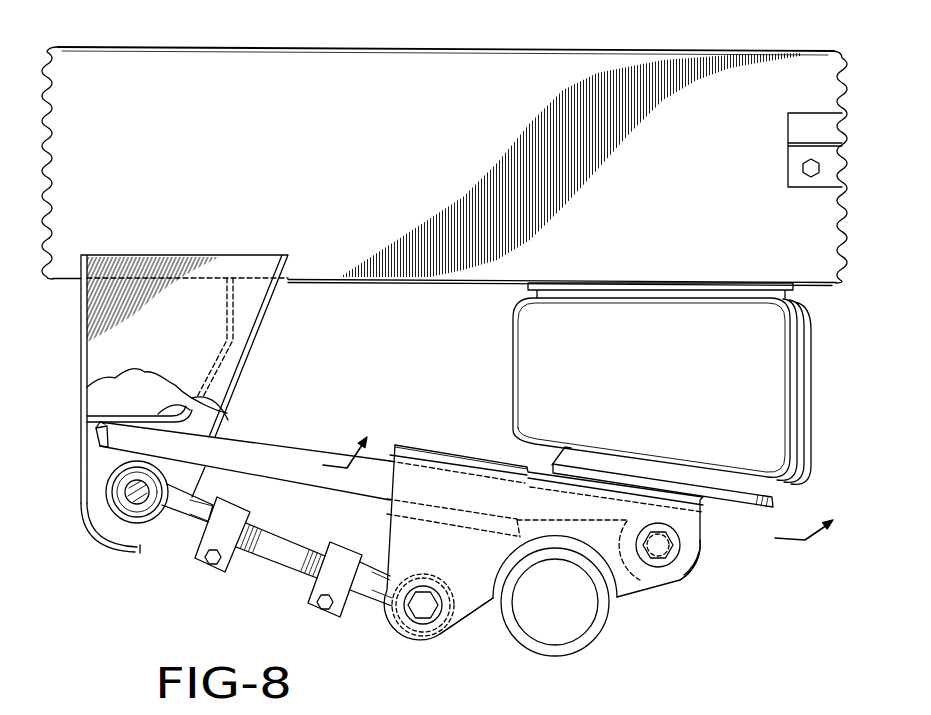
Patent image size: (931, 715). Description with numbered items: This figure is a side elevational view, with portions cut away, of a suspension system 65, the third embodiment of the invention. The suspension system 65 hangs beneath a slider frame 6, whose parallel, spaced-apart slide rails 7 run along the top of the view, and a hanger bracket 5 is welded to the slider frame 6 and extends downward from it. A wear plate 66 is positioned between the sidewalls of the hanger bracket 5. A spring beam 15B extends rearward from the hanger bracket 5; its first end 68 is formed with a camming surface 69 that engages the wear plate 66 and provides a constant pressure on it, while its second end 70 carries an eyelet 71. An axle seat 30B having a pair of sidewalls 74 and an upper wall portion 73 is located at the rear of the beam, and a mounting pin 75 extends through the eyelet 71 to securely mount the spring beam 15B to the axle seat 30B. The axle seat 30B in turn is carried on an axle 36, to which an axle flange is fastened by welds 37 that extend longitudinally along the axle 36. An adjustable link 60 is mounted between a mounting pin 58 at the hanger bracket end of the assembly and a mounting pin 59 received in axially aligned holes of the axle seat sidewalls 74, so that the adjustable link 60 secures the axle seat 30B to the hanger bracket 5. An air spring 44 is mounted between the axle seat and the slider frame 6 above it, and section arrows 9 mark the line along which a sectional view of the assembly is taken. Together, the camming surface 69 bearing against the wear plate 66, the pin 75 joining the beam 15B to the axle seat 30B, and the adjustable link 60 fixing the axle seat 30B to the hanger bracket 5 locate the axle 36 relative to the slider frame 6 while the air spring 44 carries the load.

The hanger bracket 5 is at (250, 310).
The slider frame 6 is at (444, 143).
The top wall of housing 7 is at (322, 57).
The section line 9 is at (586, 481).
The spring beam 15B is at (308, 446).
The axle seat 30B is at (580, 546).
The axle 36 is at (577, 652).
The welds 37 is at (615, 605).
The air spring 44 is at (527, 354).
The mounting pin 58 is at (140, 497).
The mounting pin 59 is at (437, 632).
The adjustable link 60 is at (273, 552).
The suspension system 65 is at (272, 562).
The wear plate 66 is at (228, 420).
The first end 68 is at (105, 438).
The camming surface 69 is at (103, 422).
The second end 70 is at (682, 582).
The eyelet 71 is at (687, 562).
The flange 73 is at (437, 467).
The sidewalls 74 is at (473, 592).
The mounting pin 75 is at (670, 543).